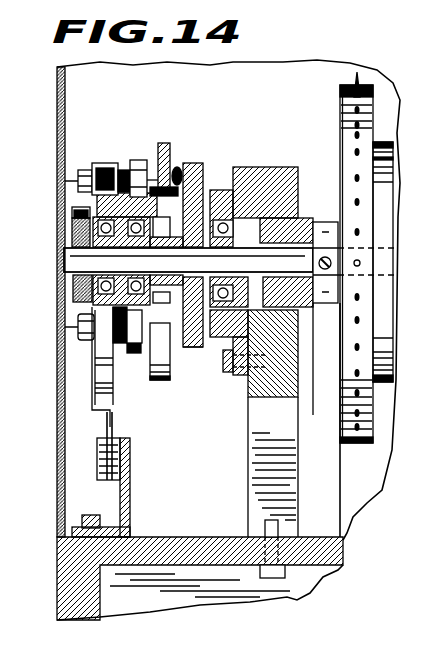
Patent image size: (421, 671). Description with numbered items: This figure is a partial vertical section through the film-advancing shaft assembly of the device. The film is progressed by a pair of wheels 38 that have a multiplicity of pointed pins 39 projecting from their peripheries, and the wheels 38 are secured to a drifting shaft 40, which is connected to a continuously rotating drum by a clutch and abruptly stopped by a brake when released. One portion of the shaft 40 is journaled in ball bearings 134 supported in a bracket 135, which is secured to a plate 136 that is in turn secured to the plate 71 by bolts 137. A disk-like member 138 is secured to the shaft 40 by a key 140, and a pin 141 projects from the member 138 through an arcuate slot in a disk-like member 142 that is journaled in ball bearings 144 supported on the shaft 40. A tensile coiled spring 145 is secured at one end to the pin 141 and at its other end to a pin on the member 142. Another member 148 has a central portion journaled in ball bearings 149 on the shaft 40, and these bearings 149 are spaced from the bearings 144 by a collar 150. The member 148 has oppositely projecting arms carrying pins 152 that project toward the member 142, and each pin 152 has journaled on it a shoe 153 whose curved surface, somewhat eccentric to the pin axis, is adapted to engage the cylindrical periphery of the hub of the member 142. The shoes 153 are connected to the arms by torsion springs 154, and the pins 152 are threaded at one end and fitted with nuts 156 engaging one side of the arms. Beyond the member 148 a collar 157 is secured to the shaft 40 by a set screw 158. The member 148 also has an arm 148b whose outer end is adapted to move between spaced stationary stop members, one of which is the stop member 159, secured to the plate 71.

The member 148 is at (63, 174).
The set screw 158 is at (72, 213).
The pins 152 is at (76, 172).
The nuts 156 is at (105, 163).
The collar 150 is at (120, 170).
The torsion springs 154 is at (110, 193).
The pin 141 is at (142, 172).
The disk-like member 142 is at (164, 143).
The tensile coiled spring 145 is at (178, 166).
The disk-like member 138 is at (193, 165).
The bearings 134 is at (220, 195).
The bracket 135 is at (238, 172).
The wheels 38 is at (340, 101).
The pointed pins 39 is at (355, 178).
The drifting shaft 40 is at (313, 224).
The collar 157 is at (72, 285).
The bearings 144 is at (125, 343).
The shoes 153 is at (145, 332).
The key 140 is at (193, 347).
The bearings 149 is at (113, 395).
The arm 148b is at (112, 428).
The stop member 159 is at (108, 488).
The plate 71 is at (207, 540).
The plate 136 is at (264, 445).
The bolts 137 is at (292, 598).